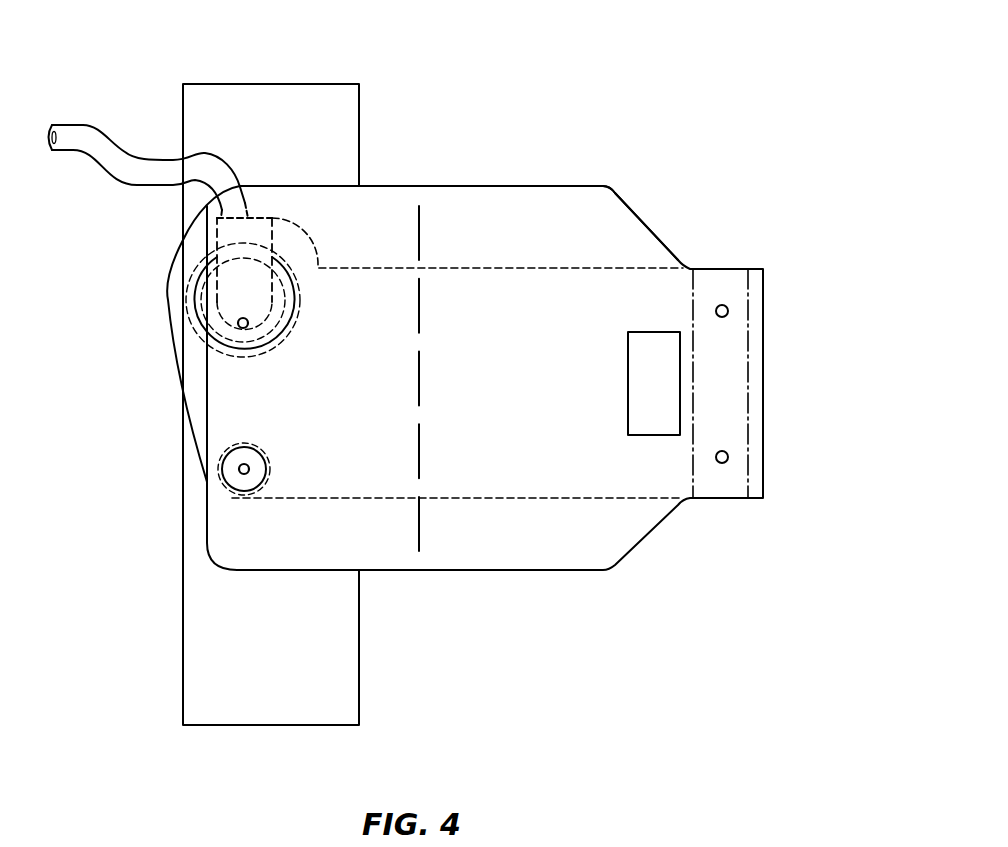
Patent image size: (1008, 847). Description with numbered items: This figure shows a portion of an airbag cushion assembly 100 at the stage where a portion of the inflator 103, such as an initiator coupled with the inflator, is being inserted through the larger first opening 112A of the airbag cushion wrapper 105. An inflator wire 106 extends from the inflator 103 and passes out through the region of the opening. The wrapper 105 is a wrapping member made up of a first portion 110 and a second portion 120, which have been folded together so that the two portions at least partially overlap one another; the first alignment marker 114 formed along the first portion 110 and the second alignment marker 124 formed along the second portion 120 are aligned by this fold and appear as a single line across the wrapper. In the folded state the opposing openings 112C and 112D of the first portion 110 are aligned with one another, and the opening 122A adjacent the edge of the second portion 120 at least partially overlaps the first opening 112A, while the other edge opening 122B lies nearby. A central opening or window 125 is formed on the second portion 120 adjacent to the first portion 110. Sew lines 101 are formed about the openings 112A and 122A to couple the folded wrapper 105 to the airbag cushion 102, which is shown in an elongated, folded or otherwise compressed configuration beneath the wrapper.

The airbag cushion assembly 100 is at (694, 86).
The sew lines 101 is at (297, 322).
The airbag cushion 102 is at (309, 104).
The inflator 103 is at (232, 243).
The airbag cushion wrapper 105 is at (672, 241).
The inflator wire 106 is at (113, 152).
The first portion 110 is at (543, 268).
The first opening 112A is at (277, 303).
The opening 112C is at (797, 365).
The opening 112D is at (728, 310).
The first alignment marker 114 is at (473, 343).
The second alignment marker 124 is at (419, 225).
The second portion 120 is at (618, 562).
The opening 122A is at (243, 326).
The opening 122B is at (244, 471).
The central opening or window 125 is at (652, 418).